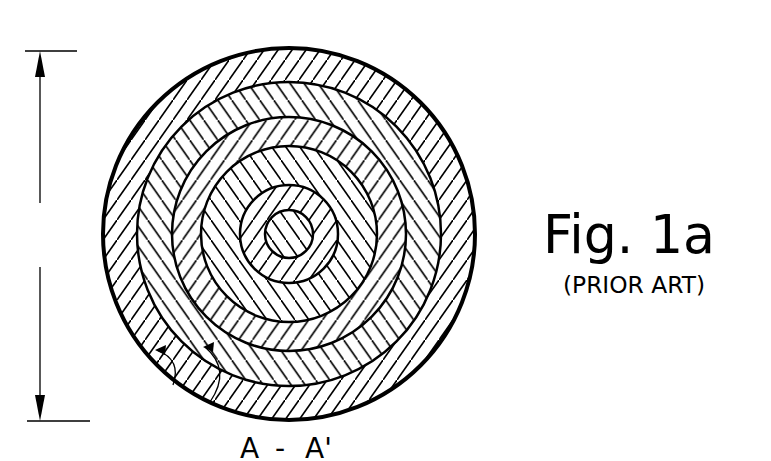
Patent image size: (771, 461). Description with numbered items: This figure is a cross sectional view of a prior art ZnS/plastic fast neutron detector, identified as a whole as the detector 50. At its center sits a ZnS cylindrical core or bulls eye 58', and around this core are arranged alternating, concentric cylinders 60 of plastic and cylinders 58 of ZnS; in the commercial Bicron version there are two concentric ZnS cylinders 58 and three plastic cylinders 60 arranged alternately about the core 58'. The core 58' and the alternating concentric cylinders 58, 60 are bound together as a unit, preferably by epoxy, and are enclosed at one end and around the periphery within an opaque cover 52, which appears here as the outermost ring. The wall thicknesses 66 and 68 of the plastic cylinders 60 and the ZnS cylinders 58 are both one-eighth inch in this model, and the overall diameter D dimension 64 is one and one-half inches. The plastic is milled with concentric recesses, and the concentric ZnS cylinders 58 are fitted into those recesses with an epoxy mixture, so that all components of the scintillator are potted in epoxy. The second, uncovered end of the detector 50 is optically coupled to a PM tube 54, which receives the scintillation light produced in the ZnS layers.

The detector 50 is at (488, 140).
The opaque cover 52 is at (460, 314).
The PM tube 54 is at (631, 456).
The cylinders of ZnS 58 is at (289, 193).
The ZnS cylindrical core 58' is at (358, 160).
The cylinders of plastic 60 is at (213, 165).
The diameter D dimension 64 is at (40, 317).
The wall thickness 66 is at (173, 385).
The wall thickness 68 is at (210, 402).